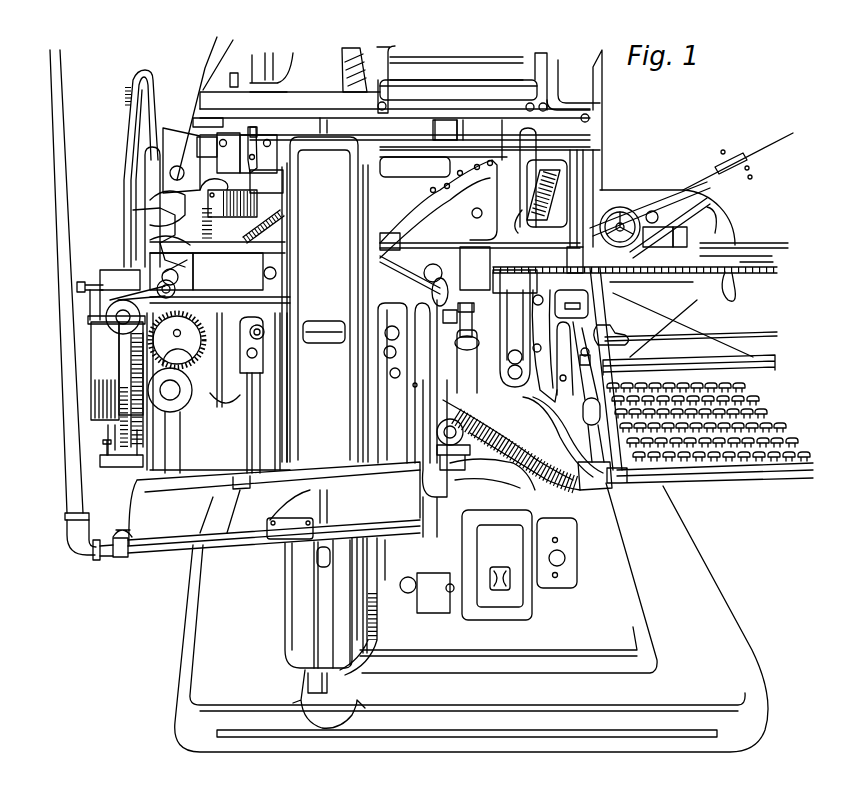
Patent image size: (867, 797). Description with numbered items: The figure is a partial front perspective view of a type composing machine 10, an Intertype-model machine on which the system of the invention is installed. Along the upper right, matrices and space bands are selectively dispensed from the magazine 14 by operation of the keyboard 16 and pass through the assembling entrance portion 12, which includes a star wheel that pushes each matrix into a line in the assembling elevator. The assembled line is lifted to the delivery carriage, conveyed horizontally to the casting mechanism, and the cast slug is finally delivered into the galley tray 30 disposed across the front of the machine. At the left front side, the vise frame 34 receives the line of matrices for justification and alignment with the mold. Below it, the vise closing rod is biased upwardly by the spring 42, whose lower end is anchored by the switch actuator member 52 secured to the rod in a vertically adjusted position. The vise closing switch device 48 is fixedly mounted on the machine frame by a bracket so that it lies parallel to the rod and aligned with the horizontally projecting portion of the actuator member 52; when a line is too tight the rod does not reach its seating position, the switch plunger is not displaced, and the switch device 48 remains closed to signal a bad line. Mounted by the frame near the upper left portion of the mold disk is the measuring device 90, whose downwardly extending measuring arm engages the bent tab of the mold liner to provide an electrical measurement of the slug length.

The type composing machine 10 is at (155, 690).
The assembling entrance portion 12 is at (612, 191).
The magazine 14 is at (726, 155).
The keyboard 16 is at (733, 469).
The galley tray 30 is at (150, 553).
The vise frame 34 is at (190, 281).
The spring 42 is at (140, 415).
The vise closing switch device 48 is at (90, 393).
The switch actuator member 52 is at (120, 462).
The measuring device 90 is at (226, 204).